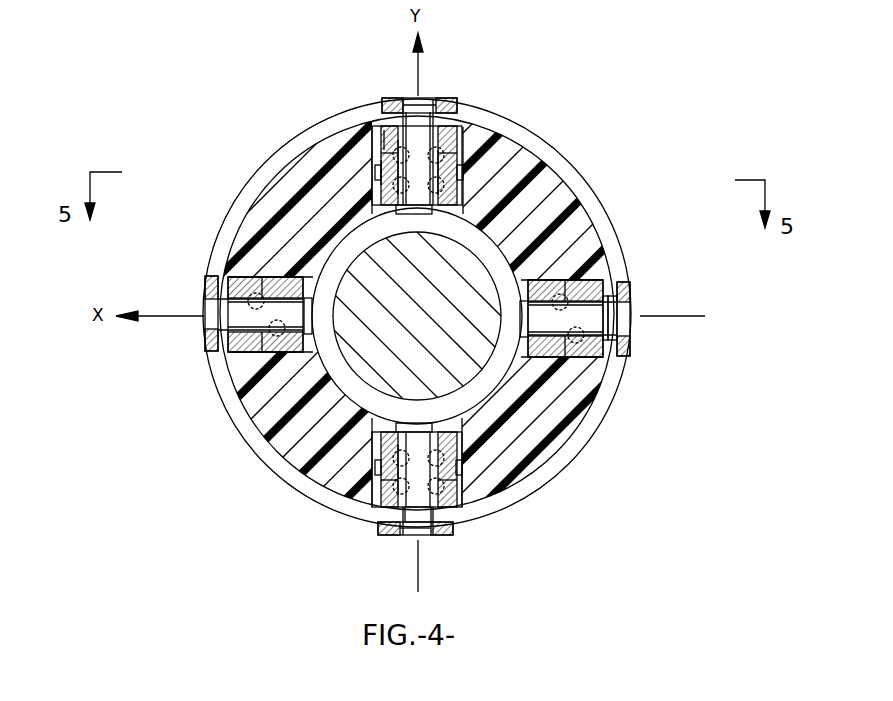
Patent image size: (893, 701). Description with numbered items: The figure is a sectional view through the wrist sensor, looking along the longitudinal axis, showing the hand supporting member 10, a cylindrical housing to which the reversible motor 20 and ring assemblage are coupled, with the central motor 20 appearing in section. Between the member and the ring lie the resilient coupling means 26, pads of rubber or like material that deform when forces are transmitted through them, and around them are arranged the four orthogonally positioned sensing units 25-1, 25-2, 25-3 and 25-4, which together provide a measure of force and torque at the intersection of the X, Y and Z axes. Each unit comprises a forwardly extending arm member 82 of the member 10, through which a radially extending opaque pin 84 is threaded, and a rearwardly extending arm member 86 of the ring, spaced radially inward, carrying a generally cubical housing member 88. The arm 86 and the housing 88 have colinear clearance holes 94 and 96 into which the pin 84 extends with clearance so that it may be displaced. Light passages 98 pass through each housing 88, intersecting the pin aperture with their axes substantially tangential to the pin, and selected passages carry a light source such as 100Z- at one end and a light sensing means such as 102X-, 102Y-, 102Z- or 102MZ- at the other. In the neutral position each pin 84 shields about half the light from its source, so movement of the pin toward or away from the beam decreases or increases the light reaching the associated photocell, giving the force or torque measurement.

The hand supporting member 10 is at (528, 106).
The reversible motor 20 is at (410, 279).
The resilient coupling means 26 is at (262, 222).
The sensing unit 25-1 is at (530, 278).
The sensing unit 25-2 is at (256, 356).
The sensing unit 25-3 is at (458, 470).
The sensing unit 25-4 is at (586, 398).
The arm members 82 is at (440, 100).
The opaque pins 84 is at (407, 115).
The arm members 86 is at (398, 110).
The housing members 88 is at (400, 211).
The clearance hole 94 is at (633, 304).
The clearance hole 96 is at (626, 335).
The light passages 98 is at (450, 128).
The light source 100Z- is at (456, 165).
The light sensing means 102X- is at (404, 124).
The light sensing means 102Y- is at (606, 302).
The light sensing means 102Z- is at (378, 165).
The light sensing means 102MZ- is at (382, 470).